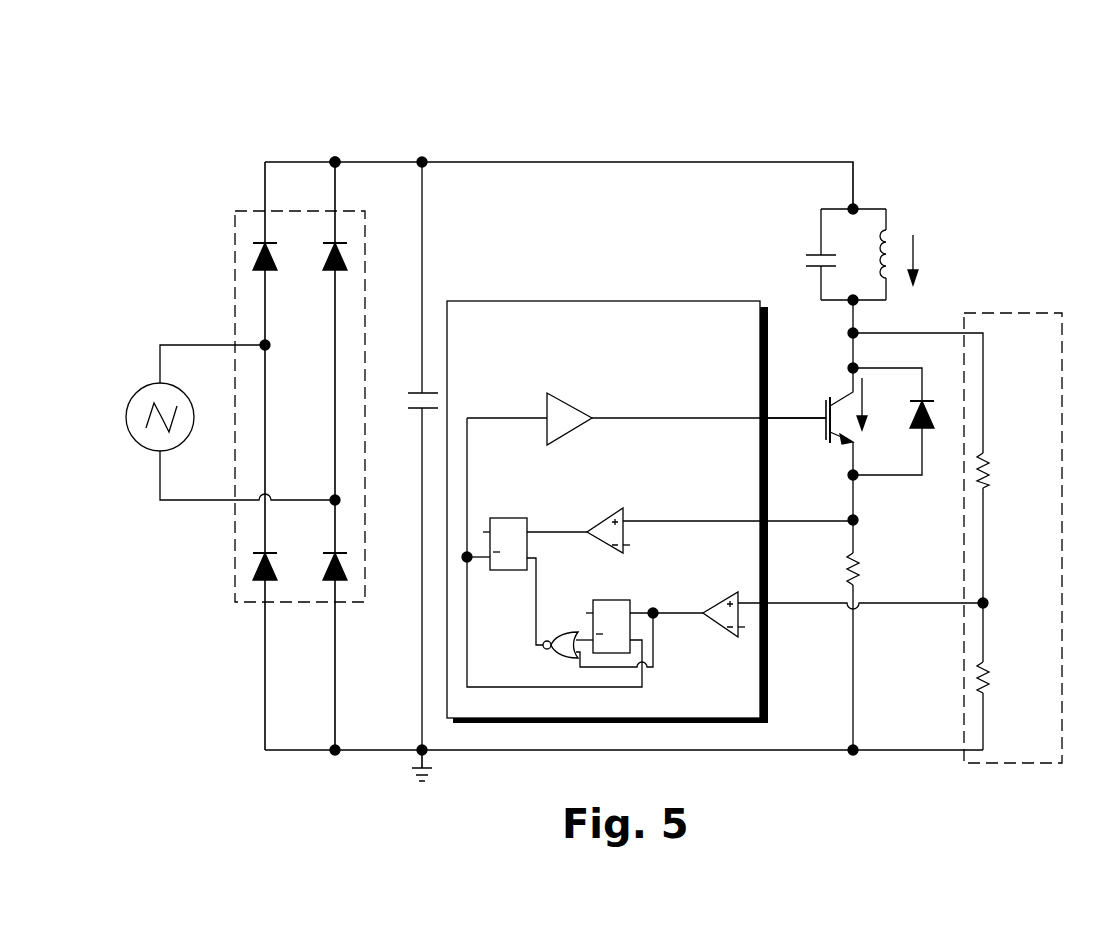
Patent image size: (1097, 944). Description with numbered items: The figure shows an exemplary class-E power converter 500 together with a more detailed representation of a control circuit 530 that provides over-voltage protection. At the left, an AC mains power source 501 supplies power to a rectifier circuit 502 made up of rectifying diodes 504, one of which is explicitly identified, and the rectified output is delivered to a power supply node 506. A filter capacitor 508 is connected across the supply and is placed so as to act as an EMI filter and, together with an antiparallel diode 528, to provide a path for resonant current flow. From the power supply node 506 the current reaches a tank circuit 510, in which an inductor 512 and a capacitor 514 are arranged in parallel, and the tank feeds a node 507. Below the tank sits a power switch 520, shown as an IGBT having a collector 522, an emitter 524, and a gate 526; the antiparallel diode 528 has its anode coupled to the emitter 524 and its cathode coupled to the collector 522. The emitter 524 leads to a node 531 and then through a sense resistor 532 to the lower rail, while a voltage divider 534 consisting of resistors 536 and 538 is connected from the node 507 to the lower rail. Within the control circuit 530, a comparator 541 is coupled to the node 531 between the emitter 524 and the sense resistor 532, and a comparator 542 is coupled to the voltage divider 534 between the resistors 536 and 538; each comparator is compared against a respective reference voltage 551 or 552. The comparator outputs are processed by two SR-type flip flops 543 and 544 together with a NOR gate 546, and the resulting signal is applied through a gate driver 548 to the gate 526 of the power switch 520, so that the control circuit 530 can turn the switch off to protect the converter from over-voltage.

The power converter 500 is at (1020, 102).
The AC mains power source 501 is at (127, 415).
The rectifier circuit 502 is at (235, 296).
The rectifying diode 504 is at (270, 268).
The power supply node 506 is at (340, 158).
The node 507 is at (847, 333).
The filter capacitor 508 is at (418, 412).
The tank circuit 510 is at (873, 207).
The inductor 512 is at (895, 233).
The capacitor 514 is at (814, 252).
The power switch 520 is at (810, 409).
The collector 522 is at (846, 386).
The emitter 524 is at (848, 452).
The gate 526 is at (822, 432).
The antiparallel diode 528 is at (928, 436).
The control circuit 530 is at (486, 266).
The node 531 is at (860, 521).
The sense resistor 532 is at (862, 563).
The voltage divider 534 is at (1016, 312).
The resistor 536 is at (990, 464).
The resistor 538 is at (992, 667).
The comparator 541 is at (602, 520).
The comparator 542 is at (720, 600).
The SR-type flip flop 543 is at (504, 518).
The SR-type flip flop 544 is at (601, 600).
The NOR gate 546 is at (568, 632).
The gate driver 548 is at (575, 438).
The reference voltage 551 is at (628, 547).
The reference voltage 552 is at (745, 630).